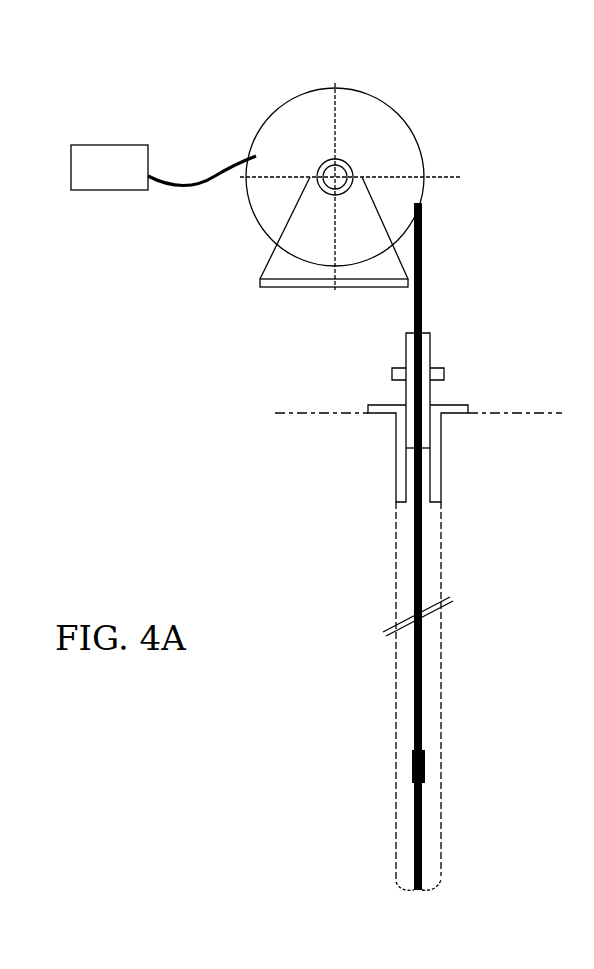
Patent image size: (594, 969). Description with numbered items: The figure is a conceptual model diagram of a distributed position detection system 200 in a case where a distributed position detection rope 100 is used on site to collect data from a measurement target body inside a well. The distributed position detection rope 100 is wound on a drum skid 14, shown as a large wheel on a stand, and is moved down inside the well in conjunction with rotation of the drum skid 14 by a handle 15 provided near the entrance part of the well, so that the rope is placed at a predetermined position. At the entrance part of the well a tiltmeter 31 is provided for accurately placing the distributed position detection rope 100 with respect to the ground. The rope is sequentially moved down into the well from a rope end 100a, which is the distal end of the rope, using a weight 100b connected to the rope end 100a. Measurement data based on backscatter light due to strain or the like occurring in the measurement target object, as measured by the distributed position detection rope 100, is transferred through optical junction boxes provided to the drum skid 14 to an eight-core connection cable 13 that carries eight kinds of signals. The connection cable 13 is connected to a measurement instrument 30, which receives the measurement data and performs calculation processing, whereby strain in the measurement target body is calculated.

The drum skid 14 is at (359, 186).
The measurement instrument 30 is at (101, 208).
The connection cable 13 is at (202, 223).
The distributed position detection rope 100 is at (454, 546).
The rope end 100a is at (464, 696).
The weight 100b is at (479, 803).
The handle 15 is at (443, 370).
The tiltmeter 31 is at (434, 428).
The distributed position detection system 200 is at (323, 399).